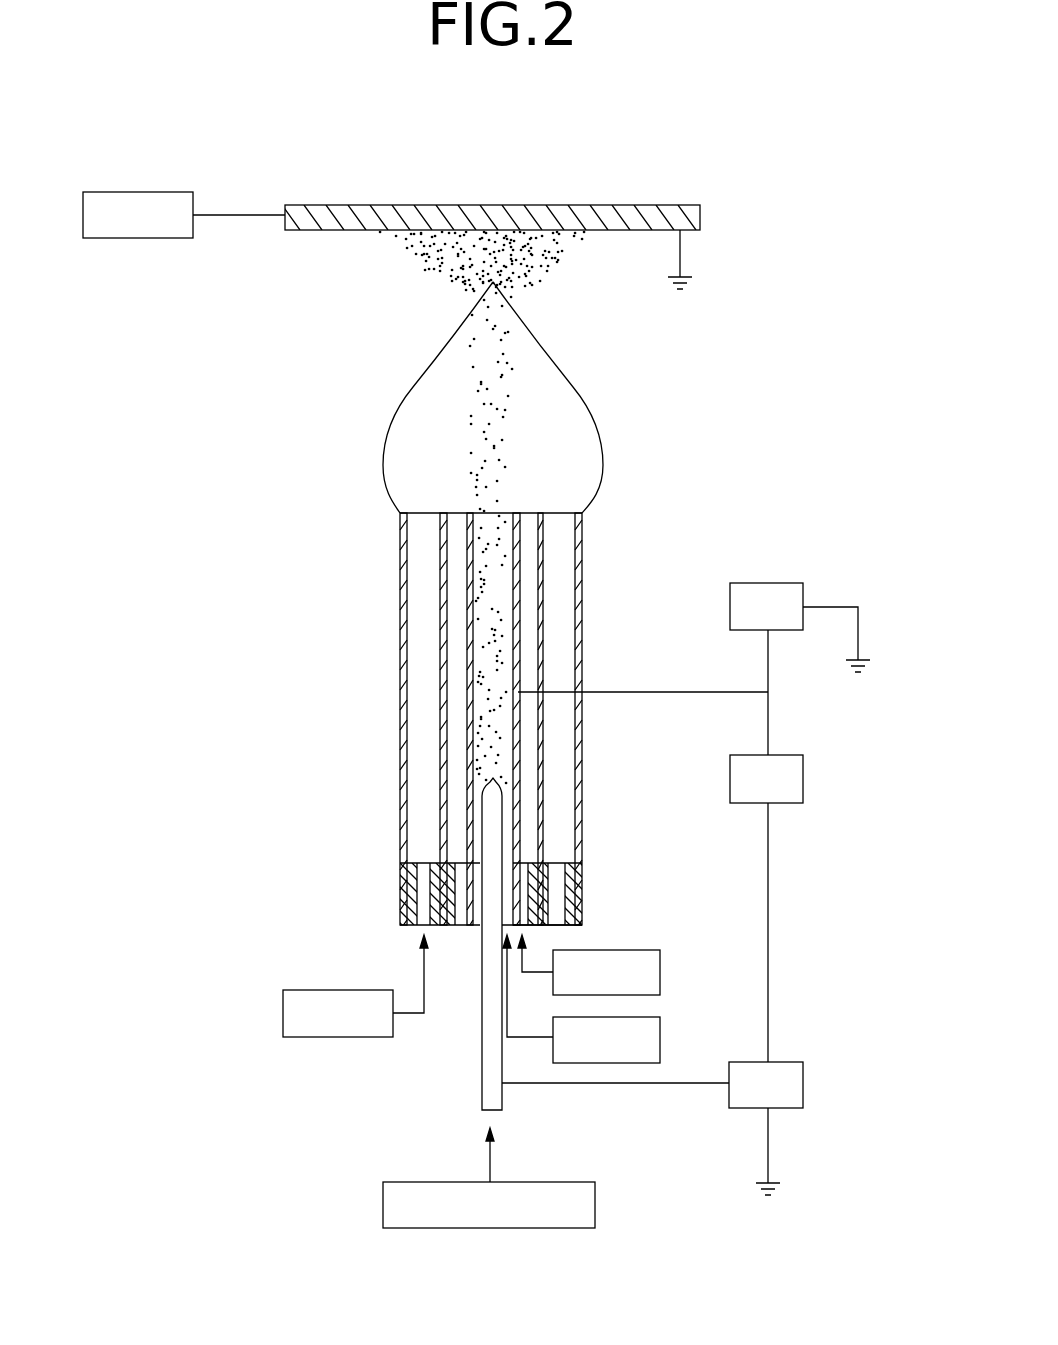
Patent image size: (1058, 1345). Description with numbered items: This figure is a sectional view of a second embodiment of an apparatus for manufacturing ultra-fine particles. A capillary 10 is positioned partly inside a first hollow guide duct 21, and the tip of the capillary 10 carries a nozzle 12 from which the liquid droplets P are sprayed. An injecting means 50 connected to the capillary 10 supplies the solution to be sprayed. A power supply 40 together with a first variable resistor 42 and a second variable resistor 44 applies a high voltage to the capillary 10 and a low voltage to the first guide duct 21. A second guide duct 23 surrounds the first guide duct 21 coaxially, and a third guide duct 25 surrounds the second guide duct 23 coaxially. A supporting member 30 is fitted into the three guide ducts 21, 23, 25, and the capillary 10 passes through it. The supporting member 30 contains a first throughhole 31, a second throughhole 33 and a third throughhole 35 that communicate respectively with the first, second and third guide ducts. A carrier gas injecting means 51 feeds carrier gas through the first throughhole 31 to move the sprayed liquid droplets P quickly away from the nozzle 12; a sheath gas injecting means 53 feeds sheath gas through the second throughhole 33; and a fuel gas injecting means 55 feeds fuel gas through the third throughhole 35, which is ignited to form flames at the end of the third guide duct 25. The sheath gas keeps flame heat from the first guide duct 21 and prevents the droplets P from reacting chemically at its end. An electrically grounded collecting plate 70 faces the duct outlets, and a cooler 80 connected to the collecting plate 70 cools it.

The capillary 10 is at (482, 838).
The nozzle 12 is at (500, 781).
The first hollow guide duct 21 is at (515, 593).
The second guide duct 23 is at (540, 630).
The third guide duct 25 is at (580, 660).
The supporting member 30 is at (507, 878).
The first throughhole 31 is at (541, 870).
The second throughhole 33 is at (523, 920).
The third throughhole 35 is at (555, 898).
The power supply 40 is at (803, 1083).
The first variable resistor 42 is at (803, 777).
The second variable resistor 44 is at (768, 583).
The injecting means 50 is at (487, 1228).
The carrier gas injecting means 51 is at (660, 1040).
The sheath gas injecting means 53 is at (660, 972).
The fuel gas injecting means 55 is at (337, 1037).
The collecting plate 70 is at (700, 213).
The cooler 80 is at (137, 238).
The sprayed liquid droplets P is at (488, 565).